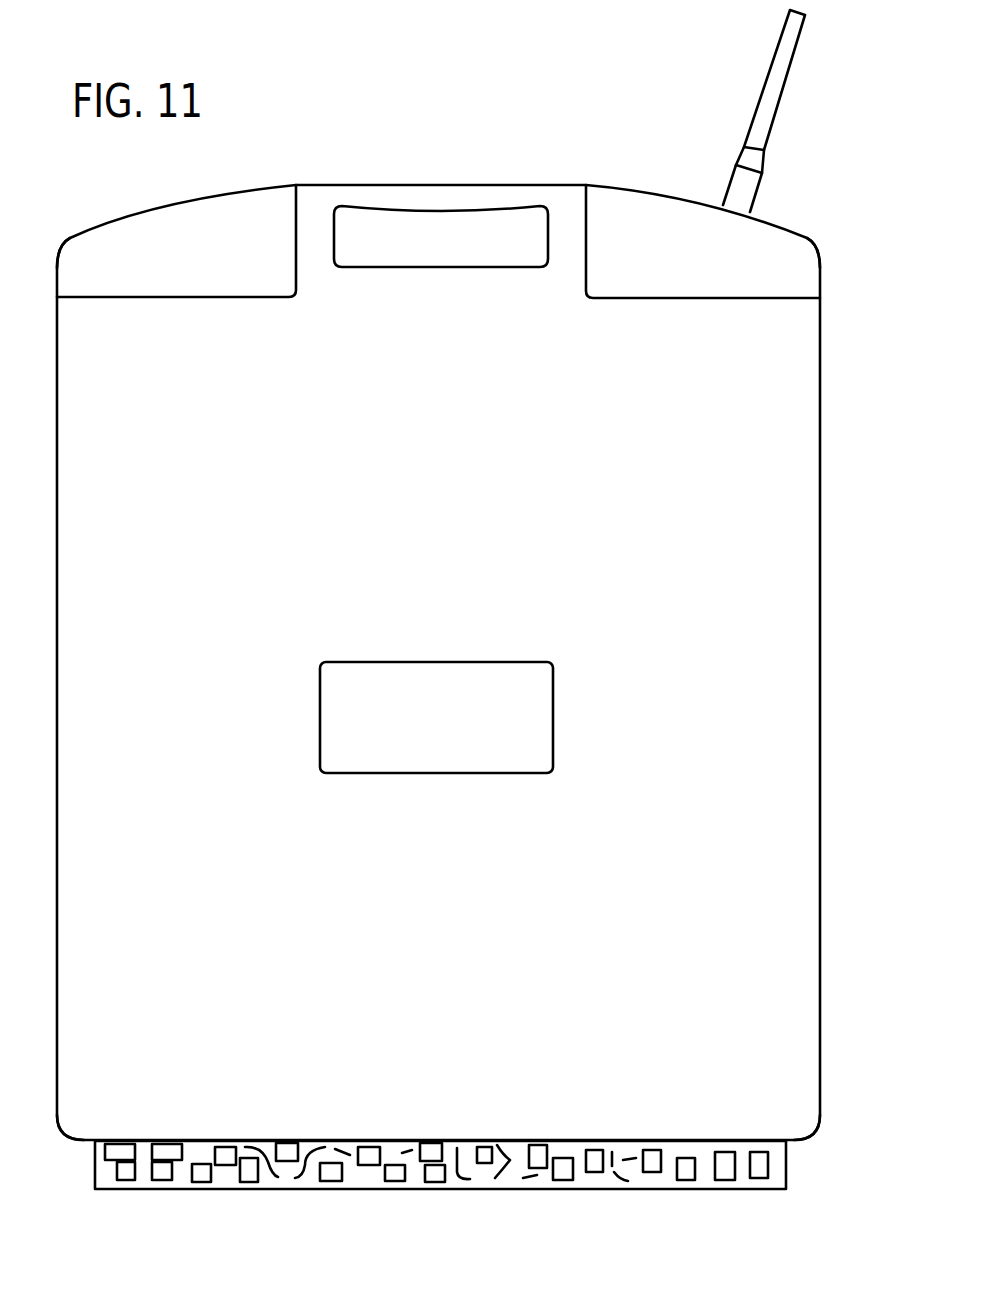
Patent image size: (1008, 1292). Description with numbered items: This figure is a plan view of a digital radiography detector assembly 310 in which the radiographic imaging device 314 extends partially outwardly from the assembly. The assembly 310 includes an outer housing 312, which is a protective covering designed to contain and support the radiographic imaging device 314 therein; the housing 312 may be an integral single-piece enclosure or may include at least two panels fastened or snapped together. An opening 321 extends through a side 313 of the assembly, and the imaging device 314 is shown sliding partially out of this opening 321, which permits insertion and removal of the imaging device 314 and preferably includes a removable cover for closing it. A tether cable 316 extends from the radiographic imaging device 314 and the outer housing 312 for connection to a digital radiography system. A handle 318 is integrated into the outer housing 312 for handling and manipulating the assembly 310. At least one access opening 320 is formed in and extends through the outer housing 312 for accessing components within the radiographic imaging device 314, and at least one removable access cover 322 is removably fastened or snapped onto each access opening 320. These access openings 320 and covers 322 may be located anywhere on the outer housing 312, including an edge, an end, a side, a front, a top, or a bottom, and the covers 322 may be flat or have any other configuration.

The digital radiography detector assembly 310 is at (288, 143).
The outer housing 312 is at (803, 488).
The side 313 is at (820, 1138).
The radiographic imaging device 314 is at (670, 1190).
The tether cable 316 is at (783, 90).
The handle 318 is at (408, 195).
The access opening 320 is at (72, 238).
The opening 321 is at (95, 1143).
The removable access cover 322 is at (195, 208).